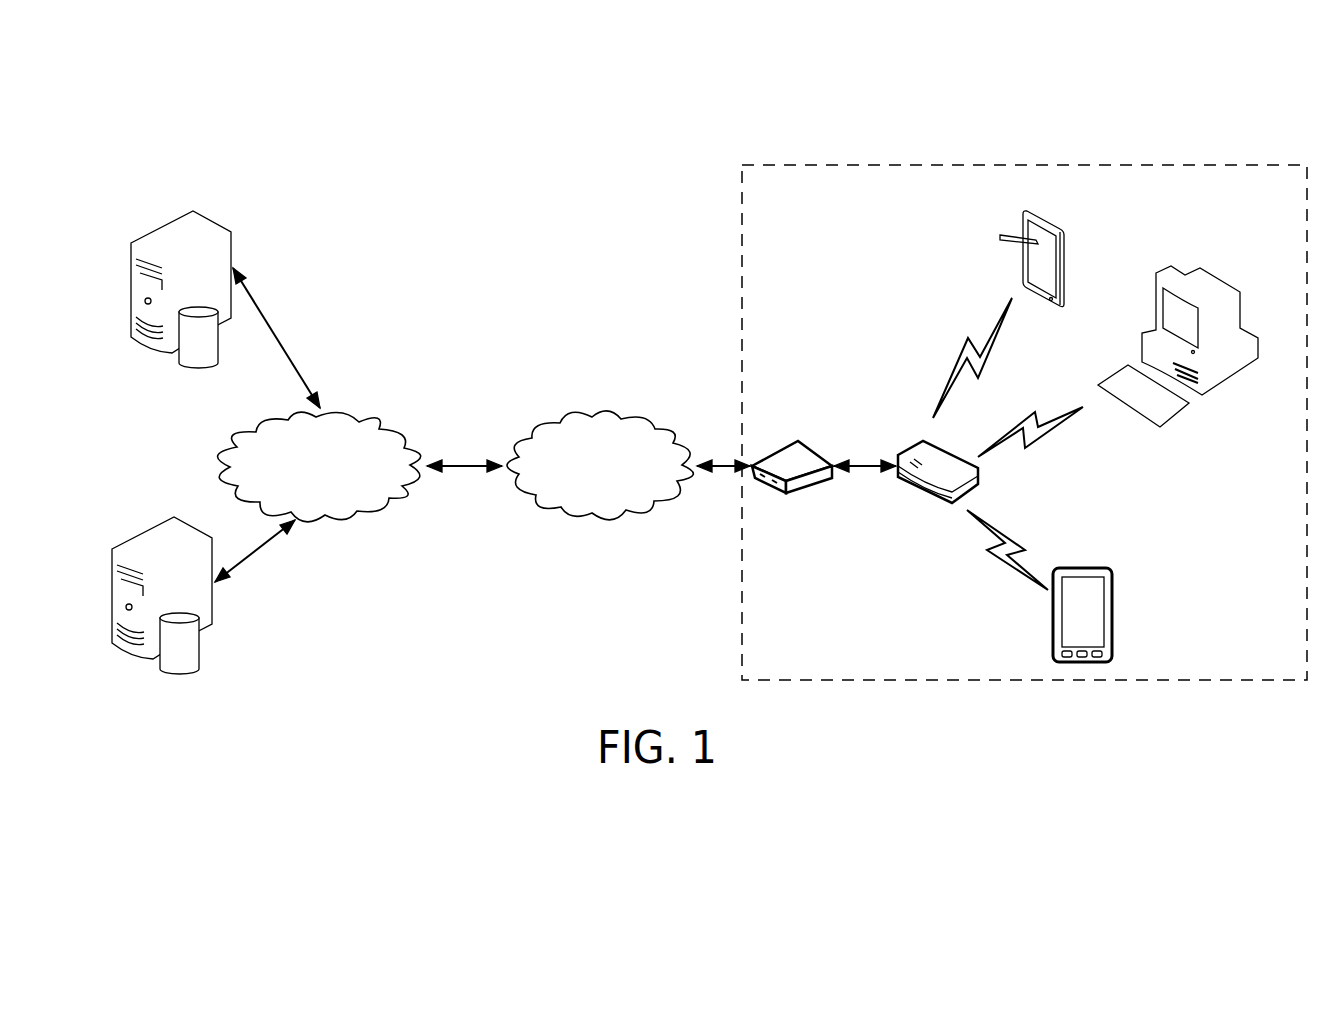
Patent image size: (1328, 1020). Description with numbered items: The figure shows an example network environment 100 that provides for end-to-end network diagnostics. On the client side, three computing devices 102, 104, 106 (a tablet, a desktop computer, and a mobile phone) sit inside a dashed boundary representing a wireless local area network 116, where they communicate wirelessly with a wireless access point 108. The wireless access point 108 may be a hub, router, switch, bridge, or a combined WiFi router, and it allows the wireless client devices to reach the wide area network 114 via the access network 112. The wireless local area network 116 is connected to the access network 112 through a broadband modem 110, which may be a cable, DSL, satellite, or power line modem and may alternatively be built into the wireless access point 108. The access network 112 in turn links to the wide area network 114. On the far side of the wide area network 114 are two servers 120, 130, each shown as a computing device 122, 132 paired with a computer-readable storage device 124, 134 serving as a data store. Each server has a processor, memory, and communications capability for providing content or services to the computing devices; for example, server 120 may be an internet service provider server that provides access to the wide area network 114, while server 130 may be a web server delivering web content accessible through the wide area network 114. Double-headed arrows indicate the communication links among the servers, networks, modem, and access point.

The network environment 100 is at (703, 78).
The computing device 102 is at (1045, 217).
The computing device 104 is at (1207, 273).
The computing device 106 is at (1093, 568).
The wireless access point 108 is at (927, 498).
The broadband modem 110 is at (785, 494).
The access network 112 is at (560, 410).
The wide area network 114 is at (340, 410).
The wireless local area network 116 is at (922, 165).
The server 120 is at (194, 306).
The computing device 122 is at (178, 219).
The computer-readable storage device 124 is at (197, 366).
The server 130 is at (193, 612).
The computing device 132 is at (137, 533).
The computer-readable storage device 134 is at (223, 644).